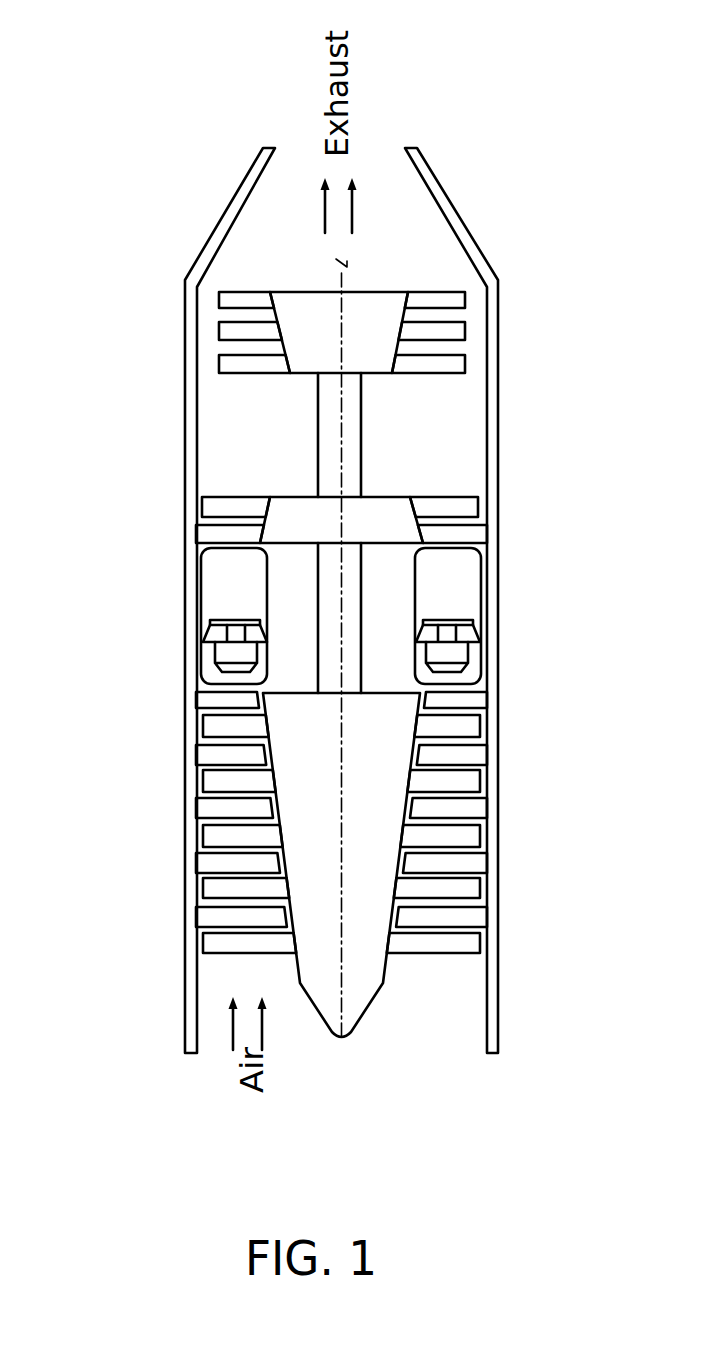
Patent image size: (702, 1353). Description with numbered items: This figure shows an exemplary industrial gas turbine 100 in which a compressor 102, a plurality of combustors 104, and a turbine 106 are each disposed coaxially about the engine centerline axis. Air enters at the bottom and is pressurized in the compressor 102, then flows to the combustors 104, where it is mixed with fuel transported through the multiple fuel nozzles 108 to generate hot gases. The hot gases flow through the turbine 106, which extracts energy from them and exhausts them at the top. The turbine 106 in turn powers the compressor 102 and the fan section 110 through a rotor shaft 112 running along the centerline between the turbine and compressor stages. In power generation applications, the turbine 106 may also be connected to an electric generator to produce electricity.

The industrial gas turbine 100 is at (136, 264).
The compressor 102 is at (214, 888).
The combustors 104 is at (224, 591).
The turbine 106 is at (226, 364).
The fuel nozzles 108 is at (224, 656).
The fan section 110 is at (462, 943).
The rotor shaft 112 is at (333, 646).